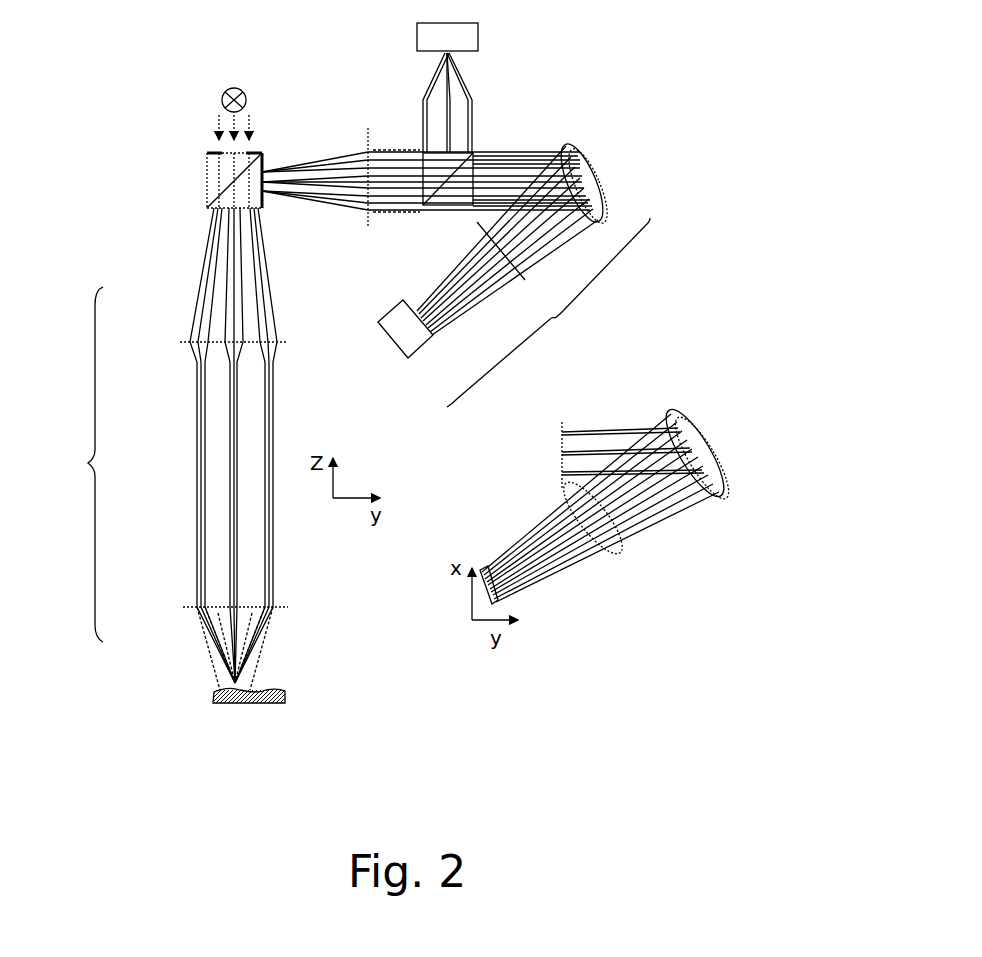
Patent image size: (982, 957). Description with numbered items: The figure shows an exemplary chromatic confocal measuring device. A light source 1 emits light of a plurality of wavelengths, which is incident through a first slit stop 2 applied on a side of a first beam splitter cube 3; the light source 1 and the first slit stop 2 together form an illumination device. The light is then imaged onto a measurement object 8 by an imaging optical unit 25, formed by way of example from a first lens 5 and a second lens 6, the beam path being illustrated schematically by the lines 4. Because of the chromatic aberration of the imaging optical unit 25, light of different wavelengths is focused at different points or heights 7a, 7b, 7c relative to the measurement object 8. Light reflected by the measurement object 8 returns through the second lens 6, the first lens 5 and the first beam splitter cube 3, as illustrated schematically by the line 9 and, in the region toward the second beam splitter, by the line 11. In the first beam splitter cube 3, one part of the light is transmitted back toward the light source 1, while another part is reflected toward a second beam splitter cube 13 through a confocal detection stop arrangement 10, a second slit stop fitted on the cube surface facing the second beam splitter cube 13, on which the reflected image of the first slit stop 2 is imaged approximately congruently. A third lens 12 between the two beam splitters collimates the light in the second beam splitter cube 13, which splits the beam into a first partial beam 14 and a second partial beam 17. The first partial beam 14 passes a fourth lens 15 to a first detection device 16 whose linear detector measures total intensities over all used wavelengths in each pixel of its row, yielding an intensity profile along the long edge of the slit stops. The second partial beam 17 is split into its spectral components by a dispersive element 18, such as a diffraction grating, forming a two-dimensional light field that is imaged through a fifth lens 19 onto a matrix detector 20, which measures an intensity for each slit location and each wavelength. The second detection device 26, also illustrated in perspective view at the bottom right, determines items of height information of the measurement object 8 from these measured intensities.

The light source 1 is at (222, 93).
The first slit stop 2 is at (207, 153).
The first beam splitter cube 3 is at (207, 185).
The lines 4 is at (208, 268).
The first lens 5 is at (182, 342).
The second lens 6 is at (183, 607).
The focus point or height 7a is at (252, 630).
The focus point or height 7b is at (253, 684).
The focus point or height 7c is at (213, 666).
The measurement object 8 is at (213, 697).
The line 9 is at (250, 272).
The confocal detection stop arrangement 10 is at (262, 165).
The reflected beam 11 is at (322, 205).
The third lens 12 is at (366, 138).
The second beam splitter cube 13 is at (418, 155).
The first partial beam 14 is at (473, 152).
The fourth lens 15 is at (472, 100).
The first detection device 16 is at (447, 37).
The second partial beam 17 is at (517, 157).
The dispersive element 18 is at (607, 178).
The fifth lens 19 is at (520, 270).
The matrix detector 20 is at (480, 566).
The imaging optical unit 25 is at (74, 464).
The second detection device 26 is at (705, 625).